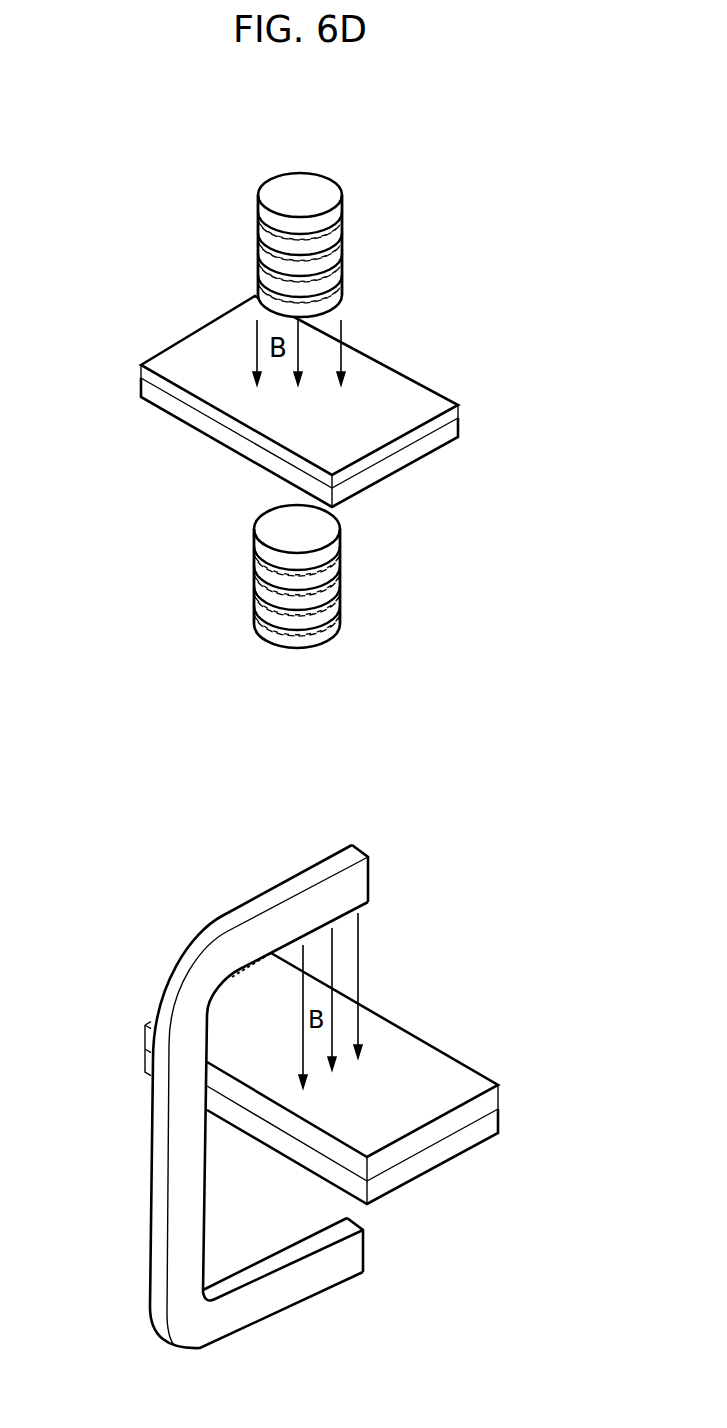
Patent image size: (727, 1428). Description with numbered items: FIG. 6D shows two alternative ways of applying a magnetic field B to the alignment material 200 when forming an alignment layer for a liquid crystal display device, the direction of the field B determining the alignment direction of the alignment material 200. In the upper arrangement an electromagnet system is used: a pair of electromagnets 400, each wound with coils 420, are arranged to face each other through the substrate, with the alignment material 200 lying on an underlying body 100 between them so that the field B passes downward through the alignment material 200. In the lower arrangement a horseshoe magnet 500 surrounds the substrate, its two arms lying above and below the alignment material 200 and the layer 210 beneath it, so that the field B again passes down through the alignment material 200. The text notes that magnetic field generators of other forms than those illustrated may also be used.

The substrate 100 is at (142, 388).
The alignment material 200 is at (141, 368).
The support layer 210 is at (490, 1125).
The electromagnet 400 is at (328, 188).
The coil 420 is at (342, 257).
The horseshoe magnet 500 is at (360, 882).